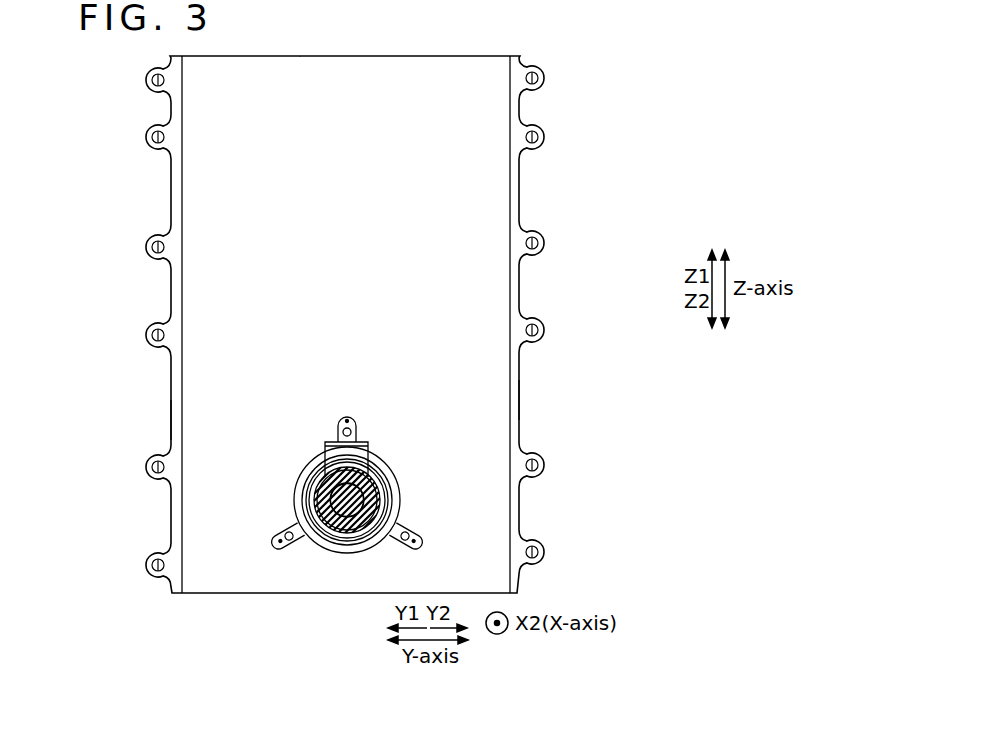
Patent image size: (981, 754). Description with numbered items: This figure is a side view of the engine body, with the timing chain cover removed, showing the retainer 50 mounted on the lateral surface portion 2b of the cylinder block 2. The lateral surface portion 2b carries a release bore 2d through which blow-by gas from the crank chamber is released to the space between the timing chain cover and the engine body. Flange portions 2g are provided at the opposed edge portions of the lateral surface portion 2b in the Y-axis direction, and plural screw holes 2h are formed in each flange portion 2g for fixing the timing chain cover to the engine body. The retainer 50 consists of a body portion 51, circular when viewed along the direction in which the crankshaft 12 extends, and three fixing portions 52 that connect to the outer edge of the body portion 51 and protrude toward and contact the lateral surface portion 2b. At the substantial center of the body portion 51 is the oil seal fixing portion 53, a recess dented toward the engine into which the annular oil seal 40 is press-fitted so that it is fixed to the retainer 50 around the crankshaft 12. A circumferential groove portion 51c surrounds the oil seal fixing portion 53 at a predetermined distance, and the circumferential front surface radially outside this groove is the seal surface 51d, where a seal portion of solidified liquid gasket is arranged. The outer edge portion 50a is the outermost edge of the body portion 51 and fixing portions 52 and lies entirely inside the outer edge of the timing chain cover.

The cylinder block 2 is at (562, 80).
The screw holes 2h is at (160, 91).
The lateral surface portion 2b is at (480, 210).
The flange portions 2g is at (176, 437).
The release bore 2d is at (370, 443).
The retainer 50 is at (370, 433).
The outer edge portion 50a is at (398, 478).
The body portion 51 is at (318, 546).
The circumferential groove portion 51c is at (385, 508).
The seal surface 51d is at (368, 543).
The fixing portions 52 is at (347, 417).
The crankshaft 12 is at (342, 497).
The oil seal 40 is at (340, 528).
The oil seal fixing portion 53 is at (343, 531).